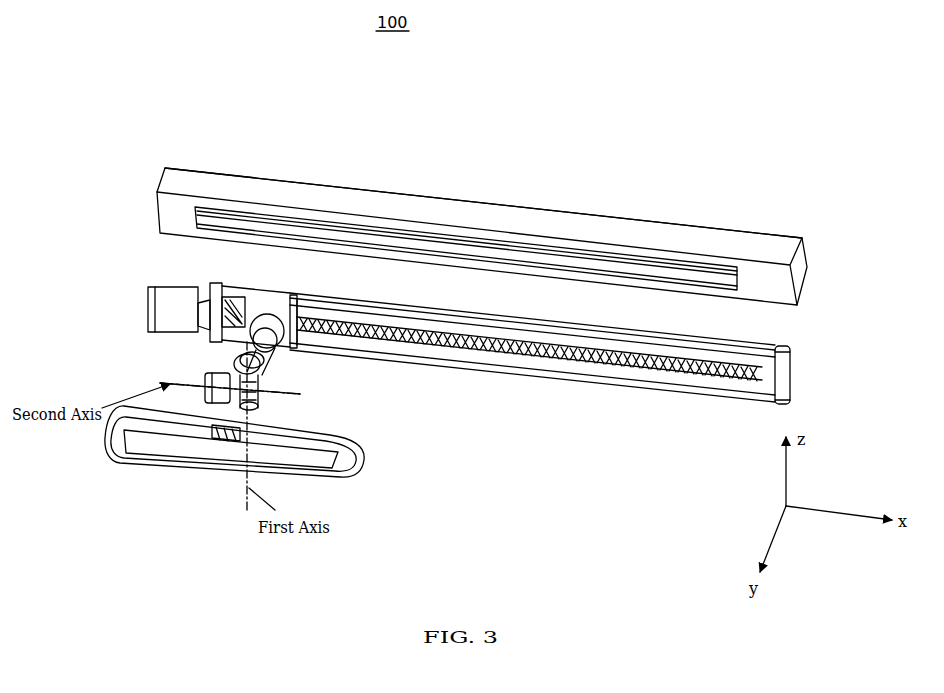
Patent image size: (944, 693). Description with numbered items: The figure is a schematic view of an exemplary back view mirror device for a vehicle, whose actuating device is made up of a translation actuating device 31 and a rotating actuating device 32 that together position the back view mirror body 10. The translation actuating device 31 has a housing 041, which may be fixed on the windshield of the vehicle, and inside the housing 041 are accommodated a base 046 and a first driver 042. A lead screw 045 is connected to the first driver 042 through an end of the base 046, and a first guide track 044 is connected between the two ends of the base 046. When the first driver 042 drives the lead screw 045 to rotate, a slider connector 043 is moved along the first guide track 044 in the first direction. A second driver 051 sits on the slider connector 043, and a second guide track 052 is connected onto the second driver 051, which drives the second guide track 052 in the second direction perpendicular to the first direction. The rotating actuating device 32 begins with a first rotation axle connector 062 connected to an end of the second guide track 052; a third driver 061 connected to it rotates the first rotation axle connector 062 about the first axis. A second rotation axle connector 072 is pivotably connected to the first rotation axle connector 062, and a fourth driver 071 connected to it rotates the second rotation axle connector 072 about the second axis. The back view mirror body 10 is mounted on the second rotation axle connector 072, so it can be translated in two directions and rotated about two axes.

The translation actuating device 31 is at (718, 200).
The rotating actuating device 32 is at (447, 438).
The housing 041 is at (310, 198).
The first driver 042 is at (167, 312).
The slider connector 043 is at (267, 315).
The first guide track 044 is at (583, 343).
The lead screw 045 is at (653, 362).
The base 046 is at (787, 372).
The second driver 051 is at (275, 328).
The second guide track 052 is at (277, 348).
The third driver 061 is at (233, 362).
The first rotation axle connector 062 is at (254, 386).
The fourth driver 071 is at (207, 380).
The second rotation axle connector 072 is at (258, 408).
The back view mirror body 10 is at (357, 462).